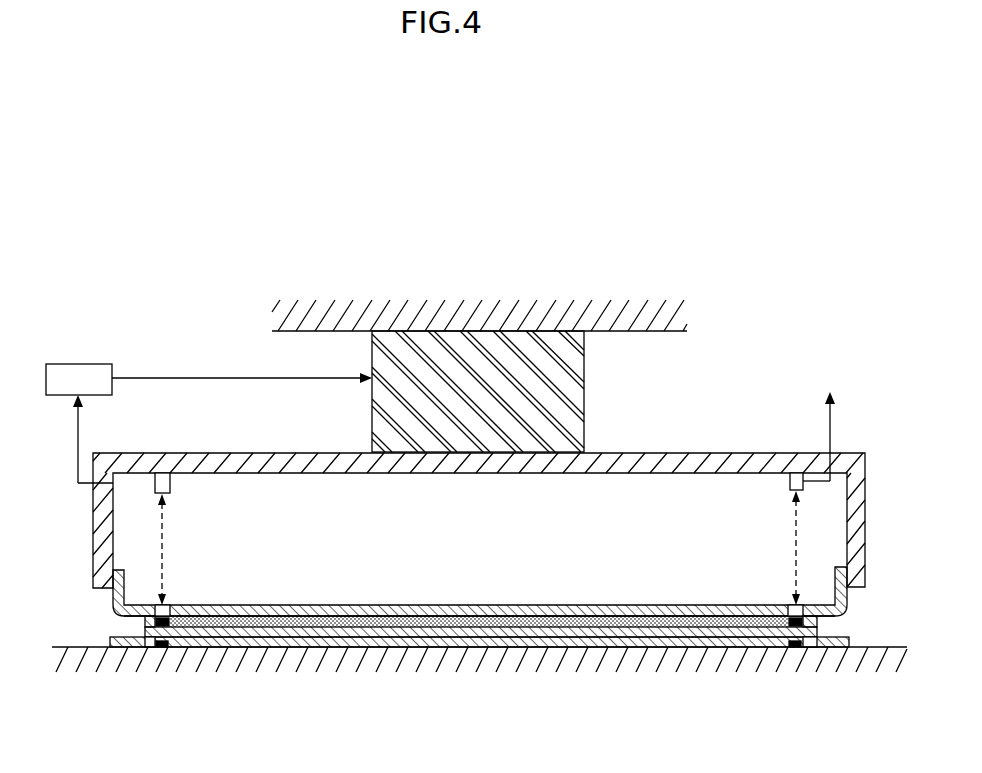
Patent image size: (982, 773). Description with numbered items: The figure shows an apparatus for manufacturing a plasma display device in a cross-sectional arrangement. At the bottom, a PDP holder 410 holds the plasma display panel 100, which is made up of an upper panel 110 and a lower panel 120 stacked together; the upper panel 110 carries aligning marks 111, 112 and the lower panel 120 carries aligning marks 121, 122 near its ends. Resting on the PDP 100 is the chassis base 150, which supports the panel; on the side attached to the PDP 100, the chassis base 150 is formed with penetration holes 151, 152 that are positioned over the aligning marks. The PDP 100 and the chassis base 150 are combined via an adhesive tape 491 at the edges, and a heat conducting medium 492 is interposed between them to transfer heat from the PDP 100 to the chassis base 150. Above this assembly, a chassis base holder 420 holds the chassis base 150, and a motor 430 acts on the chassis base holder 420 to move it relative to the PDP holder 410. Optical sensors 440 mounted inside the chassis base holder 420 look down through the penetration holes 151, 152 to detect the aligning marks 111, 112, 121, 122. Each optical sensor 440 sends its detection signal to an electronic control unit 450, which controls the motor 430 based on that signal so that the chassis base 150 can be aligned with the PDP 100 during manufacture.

The plasma display panel 100 is at (479, 696).
The upper panel 110 is at (357, 644).
The aligning mark 111 is at (165, 643).
The aligning mark 112 is at (797, 646).
The lower panel 120 is at (430, 634).
The aligning mark 121 is at (150, 646).
The aligning mark 122 is at (810, 639).
The chassis base 150 is at (620, 606).
The penetration hole 151 is at (172, 606).
The penetration hole 152 is at (788, 606).
The PDP holder 410 is at (673, 650).
The chassis base holder 420 is at (684, 458).
The motor 430 is at (576, 389).
The optical sensor 440 is at (172, 485).
The electronic control unit 450 is at (96, 364).
The adhesive tape 491 is at (145, 623).
The heat conducting medium 492 is at (578, 646).